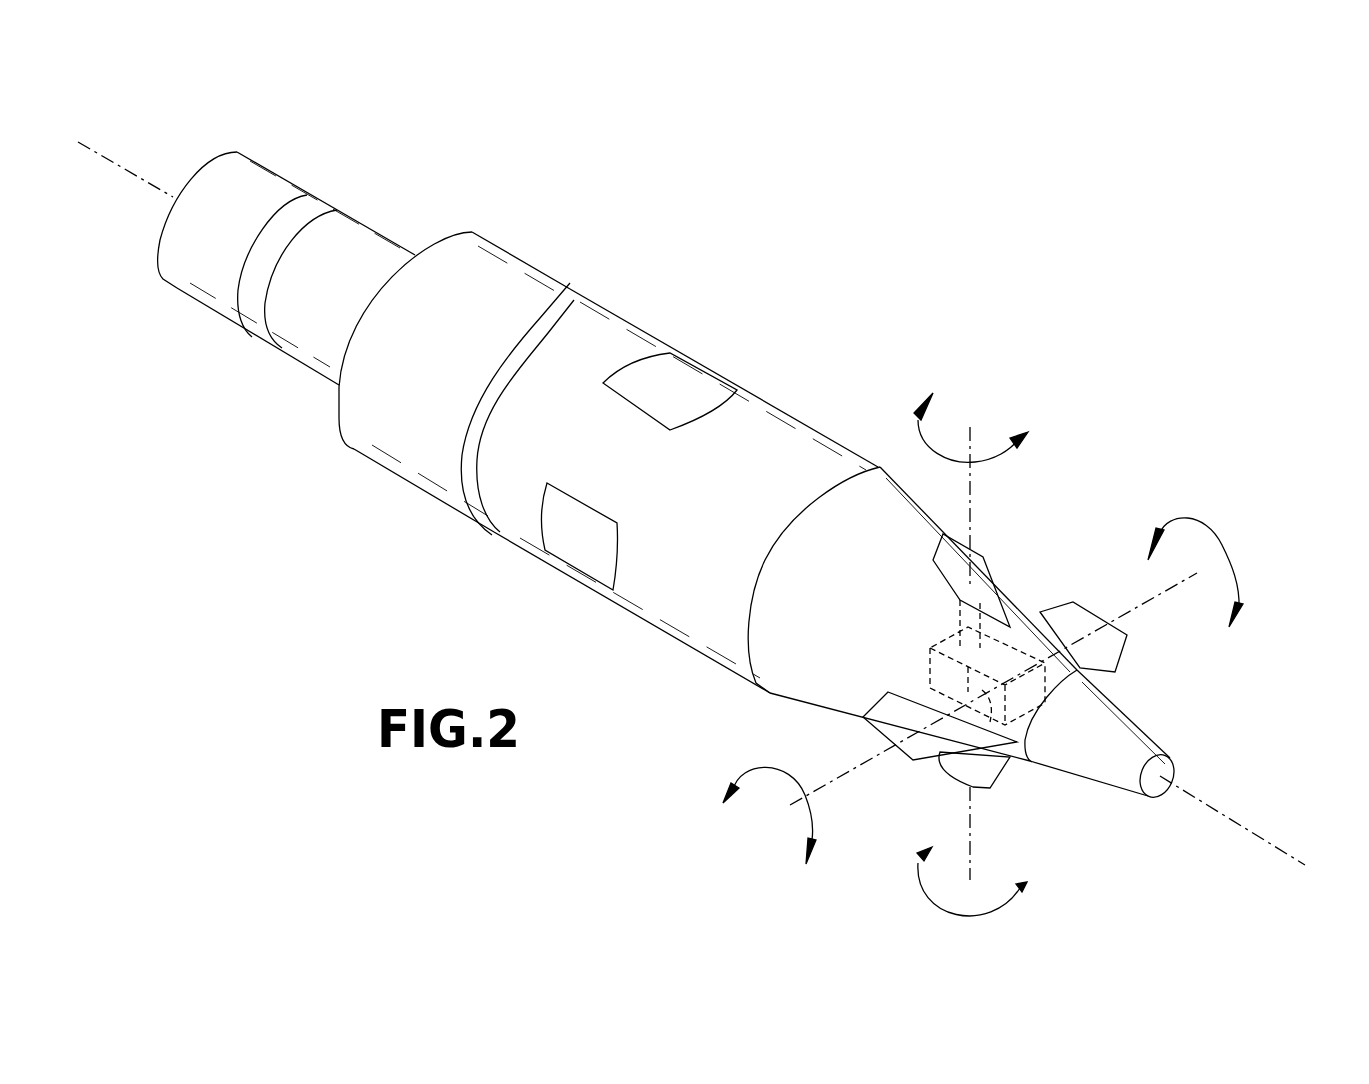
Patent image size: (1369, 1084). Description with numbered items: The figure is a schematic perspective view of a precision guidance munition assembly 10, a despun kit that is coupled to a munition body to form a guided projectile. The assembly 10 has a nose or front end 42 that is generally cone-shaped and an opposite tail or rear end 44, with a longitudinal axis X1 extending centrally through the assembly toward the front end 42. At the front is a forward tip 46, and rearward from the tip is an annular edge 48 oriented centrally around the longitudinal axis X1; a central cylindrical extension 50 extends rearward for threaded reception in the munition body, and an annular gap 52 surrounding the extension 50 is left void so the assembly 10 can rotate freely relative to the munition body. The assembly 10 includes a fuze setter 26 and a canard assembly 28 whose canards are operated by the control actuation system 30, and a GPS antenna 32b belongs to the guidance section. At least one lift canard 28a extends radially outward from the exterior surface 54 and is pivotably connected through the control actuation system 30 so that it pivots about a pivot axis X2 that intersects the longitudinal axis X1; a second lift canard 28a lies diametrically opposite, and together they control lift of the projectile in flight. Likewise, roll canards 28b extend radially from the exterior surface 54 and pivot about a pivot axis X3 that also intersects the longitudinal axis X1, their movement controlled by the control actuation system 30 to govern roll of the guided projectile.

The precision guidance munition assembly 10 is at (704, 497).
The fuze setter 26 is at (1152, 714).
The canard assembly 28 is at (1037, 707).
The lift canard 28a is at (1087, 623).
The roll canard 28b is at (947, 567).
The control actuation system 30 is at (928, 640).
The GPS antenna 32b is at (683, 384).
The nose or front end 42 is at (1180, 810).
The tail or rear end 44 is at (176, 171).
The forward tip 46 is at (1180, 770).
The annular edge 48 is at (498, 380).
The central cylindrical extension 50 is at (287, 360).
The gap 52 is at (571, 291).
The exterior surface 54 is at (697, 501).
The longitudinal axis X1 is at (120, 172).
The pivot axis of lift canard X2 is at (788, 818).
The pivot axis of roll canard X3 is at (973, 483).